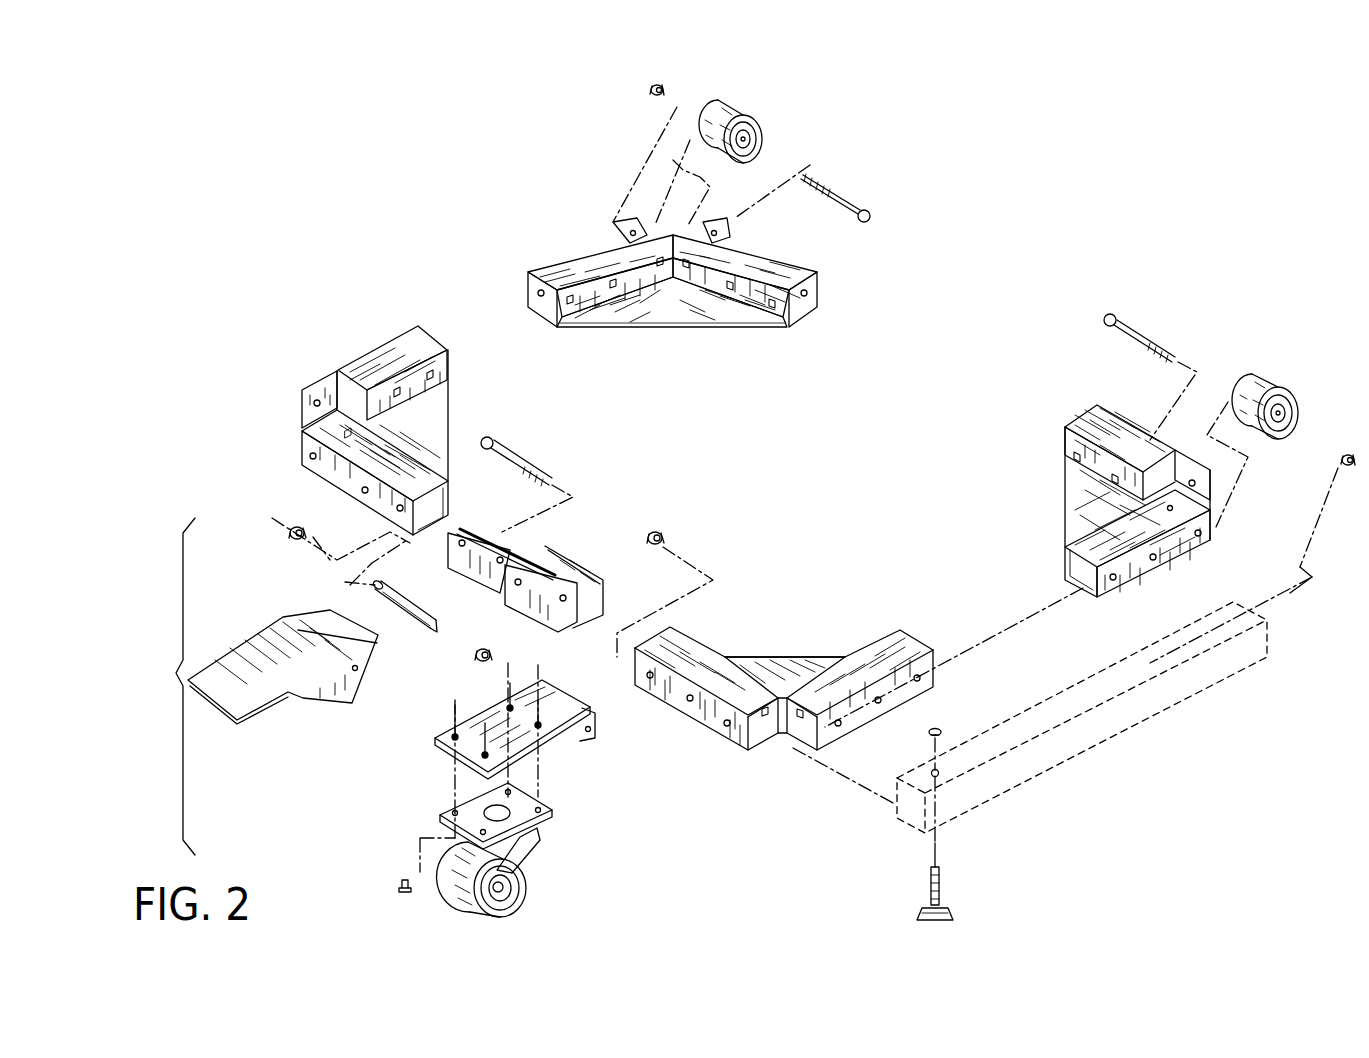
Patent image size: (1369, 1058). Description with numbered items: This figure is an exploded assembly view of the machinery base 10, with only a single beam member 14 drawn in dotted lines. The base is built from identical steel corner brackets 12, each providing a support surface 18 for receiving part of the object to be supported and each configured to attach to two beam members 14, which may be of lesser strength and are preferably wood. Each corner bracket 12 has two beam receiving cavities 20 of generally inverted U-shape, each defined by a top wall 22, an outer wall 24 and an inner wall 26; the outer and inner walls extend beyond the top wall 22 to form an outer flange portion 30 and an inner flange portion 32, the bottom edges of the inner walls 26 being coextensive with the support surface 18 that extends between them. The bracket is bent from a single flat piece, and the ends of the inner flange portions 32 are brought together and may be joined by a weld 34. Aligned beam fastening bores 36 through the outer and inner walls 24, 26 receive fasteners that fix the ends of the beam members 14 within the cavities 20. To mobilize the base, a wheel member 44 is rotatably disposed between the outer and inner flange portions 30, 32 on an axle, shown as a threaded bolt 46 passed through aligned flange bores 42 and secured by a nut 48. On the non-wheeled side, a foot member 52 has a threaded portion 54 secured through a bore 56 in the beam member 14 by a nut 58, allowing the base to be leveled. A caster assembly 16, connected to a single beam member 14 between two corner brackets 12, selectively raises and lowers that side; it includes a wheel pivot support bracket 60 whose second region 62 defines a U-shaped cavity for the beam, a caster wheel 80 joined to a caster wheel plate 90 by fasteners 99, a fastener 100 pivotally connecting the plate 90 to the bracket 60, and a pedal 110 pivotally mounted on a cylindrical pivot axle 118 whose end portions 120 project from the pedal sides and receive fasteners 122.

The machinery base 10 is at (328, 293).
The corner bracket 12 is at (560, 245).
The beam member 14 is at (1117, 727).
The caster assembly 16 is at (163, 686).
The support surface 18 is at (730, 318).
The beam receiving cavity 20 is at (545, 313).
The top wall 22 is at (873, 655).
The outer wall 24 is at (700, 716).
The inner wall 26 is at (614, 302).
The outer flange portion 30 is at (728, 222).
The inner flange portion 32 is at (707, 260).
The weld 34 is at (781, 735).
The beam fastening bore 36 is at (580, 302).
The flange bore 42 is at (697, 262).
The wheel member 44 is at (752, 112).
The threaded bolt 46 is at (843, 195).
The nut 48 is at (650, 92).
The foot member 52 is at (955, 915).
The threaded portion 54 is at (929, 885).
The bore 56 is at (940, 776).
The nut 58 is at (940, 727).
The wheel pivot support bracket 60 is at (539, 545).
The second region 62 is at (580, 567).
The caster wheel 80 is at (522, 864).
The caster wheel plate 90 is at (440, 747).
The fastener 99 is at (400, 882).
The fastener 100 is at (522, 462).
The pedal 110 is at (254, 692).
The cylindrical pivot axle 118 is at (414, 625).
The end portion 120 is at (376, 589).
The nut 122 is at (292, 538).